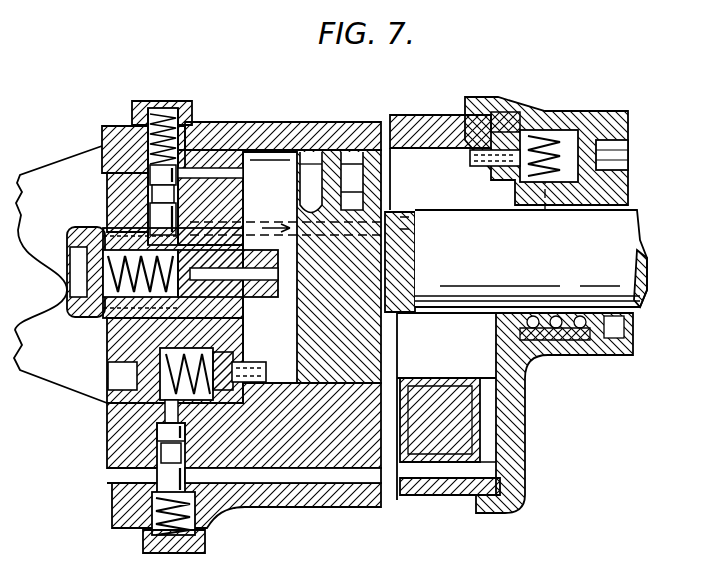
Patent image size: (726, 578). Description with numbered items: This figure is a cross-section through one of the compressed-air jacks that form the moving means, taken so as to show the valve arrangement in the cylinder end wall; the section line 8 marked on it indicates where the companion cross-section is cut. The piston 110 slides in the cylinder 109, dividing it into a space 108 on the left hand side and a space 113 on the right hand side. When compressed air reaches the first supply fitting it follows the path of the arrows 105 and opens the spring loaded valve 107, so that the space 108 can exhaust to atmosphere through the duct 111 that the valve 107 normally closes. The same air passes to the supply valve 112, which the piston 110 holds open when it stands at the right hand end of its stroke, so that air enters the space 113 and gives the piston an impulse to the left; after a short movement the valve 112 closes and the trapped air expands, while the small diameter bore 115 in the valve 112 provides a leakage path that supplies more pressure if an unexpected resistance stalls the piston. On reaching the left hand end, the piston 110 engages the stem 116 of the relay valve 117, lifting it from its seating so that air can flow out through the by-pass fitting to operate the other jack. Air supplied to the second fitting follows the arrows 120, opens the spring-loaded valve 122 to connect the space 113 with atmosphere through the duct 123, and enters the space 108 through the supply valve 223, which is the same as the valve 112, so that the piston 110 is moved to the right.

The section line 8— 8 is at (141, 67).
The arrows 105 is at (261, 224).
The spring loaded valve 107 is at (158, 222).
The space 108 is at (268, 165).
The cylinder 109 is at (352, 150).
The piston 110 is at (325, 155).
The duct 111 is at (223, 175).
The supply valve 112 is at (518, 150).
The space 113 is at (428, 160).
The small diameter bore 115 is at (498, 150).
The stem 116 is at (278, 277).
The relay valve 117 is at (185, 282).
The arrows 120 is at (255, 368).
The spring-loaded valve 122 is at (162, 478).
The duct 123 is at (280, 480).
The supply valve 223 is at (222, 380).